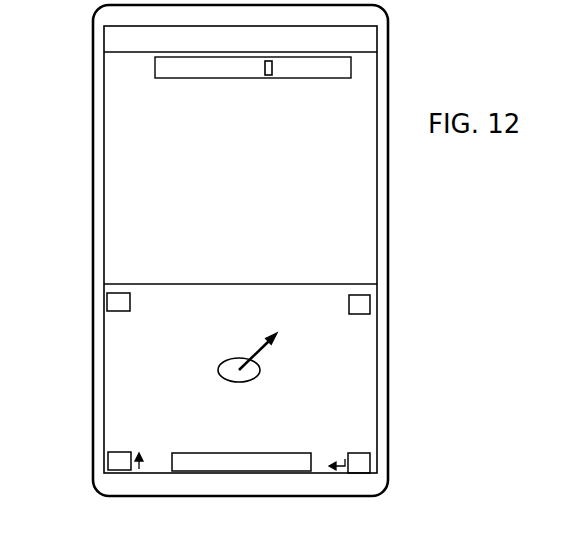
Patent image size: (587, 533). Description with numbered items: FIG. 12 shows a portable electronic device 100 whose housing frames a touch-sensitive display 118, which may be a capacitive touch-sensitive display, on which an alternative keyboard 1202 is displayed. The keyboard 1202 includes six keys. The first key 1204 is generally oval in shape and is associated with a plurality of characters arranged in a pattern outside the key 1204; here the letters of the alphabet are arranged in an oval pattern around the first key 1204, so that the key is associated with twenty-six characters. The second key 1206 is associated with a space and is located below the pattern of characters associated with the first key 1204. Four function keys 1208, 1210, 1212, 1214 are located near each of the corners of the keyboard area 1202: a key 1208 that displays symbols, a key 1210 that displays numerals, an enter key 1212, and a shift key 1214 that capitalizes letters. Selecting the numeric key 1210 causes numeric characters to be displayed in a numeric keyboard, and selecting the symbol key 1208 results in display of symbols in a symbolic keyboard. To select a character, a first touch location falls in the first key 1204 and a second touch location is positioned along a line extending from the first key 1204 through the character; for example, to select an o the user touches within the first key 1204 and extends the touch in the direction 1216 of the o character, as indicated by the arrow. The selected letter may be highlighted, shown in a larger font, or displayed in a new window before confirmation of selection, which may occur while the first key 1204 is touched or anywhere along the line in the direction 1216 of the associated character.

The portable electronic device 100 is at (438, 30).
The touch-sensitive display 118 is at (360, 178).
The keyboard 1202 is at (377, 368).
The first key 1204 is at (238, 368).
The direction 1216 is at (280, 323).
The symbol key 1208 is at (118, 300).
The numeric key 1210 is at (370, 305).
The enter key 1212 is at (360, 462).
The shift key 1214 is at (115, 462).
The second key 1206 is at (198, 462).